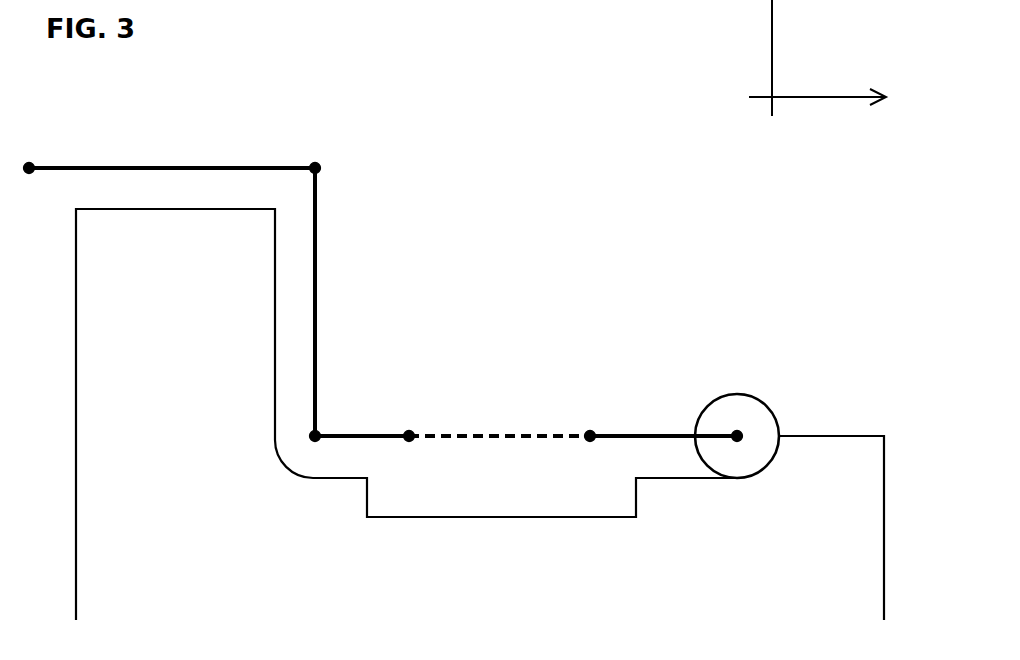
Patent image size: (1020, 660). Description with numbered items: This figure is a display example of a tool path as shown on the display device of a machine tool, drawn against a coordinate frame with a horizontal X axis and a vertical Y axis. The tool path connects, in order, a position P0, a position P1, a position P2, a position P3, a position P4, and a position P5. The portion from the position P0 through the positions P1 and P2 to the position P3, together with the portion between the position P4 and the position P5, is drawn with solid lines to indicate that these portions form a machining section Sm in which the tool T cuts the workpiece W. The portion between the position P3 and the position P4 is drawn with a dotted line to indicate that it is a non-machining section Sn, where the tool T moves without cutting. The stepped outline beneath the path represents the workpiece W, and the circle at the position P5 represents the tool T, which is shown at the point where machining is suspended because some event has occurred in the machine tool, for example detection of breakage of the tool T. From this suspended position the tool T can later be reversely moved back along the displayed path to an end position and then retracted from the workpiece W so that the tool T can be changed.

The position P0 is at (29, 154).
The position P1 is at (315, 154).
The position P2 is at (330, 422).
The position P3 is at (411, 422).
The position P4 is at (594, 422).
The position P5 is at (737, 424).
The machining section Sm is at (317, 272).
The non-machining section Sn is at (481, 434).
The tool T is at (760, 397).
The workpiece W is at (838, 436).
The X axis X is at (817, 117).
The Y axis Y is at (756, 58).